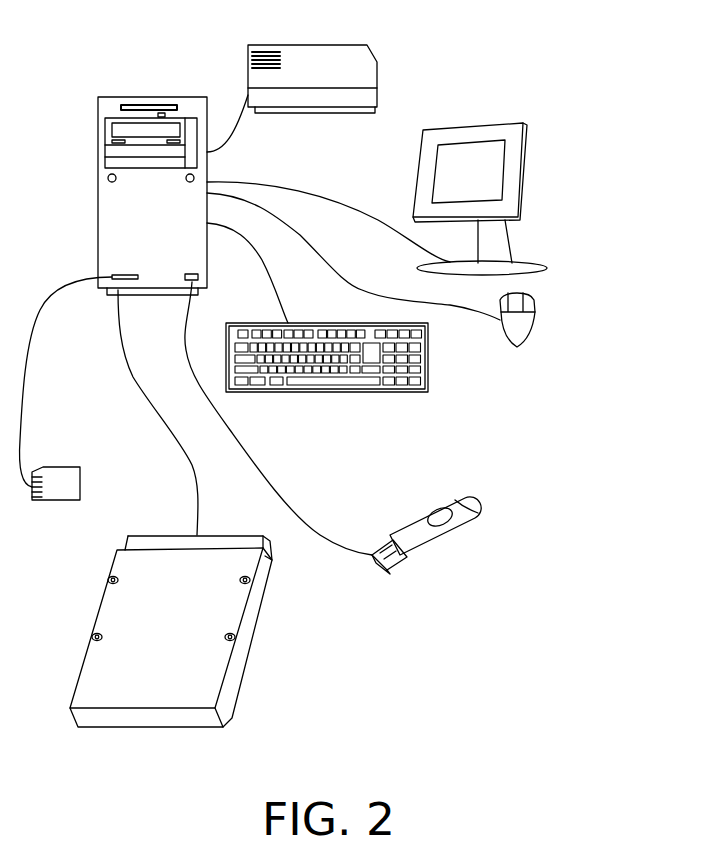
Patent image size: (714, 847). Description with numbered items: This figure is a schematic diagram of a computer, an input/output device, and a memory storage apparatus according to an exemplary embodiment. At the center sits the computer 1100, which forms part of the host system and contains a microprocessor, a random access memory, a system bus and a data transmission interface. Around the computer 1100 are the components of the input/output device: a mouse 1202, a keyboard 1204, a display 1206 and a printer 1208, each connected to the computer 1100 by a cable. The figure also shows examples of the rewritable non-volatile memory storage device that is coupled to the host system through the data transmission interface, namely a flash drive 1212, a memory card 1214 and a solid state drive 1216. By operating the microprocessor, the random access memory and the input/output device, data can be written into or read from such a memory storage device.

The computer 1100 is at (152, 97).
The printer 1208 is at (308, 45).
The display 1206 is at (482, 125).
The mouse 1202 is at (535, 323).
The keyboard 1204 is at (430, 370).
The memory card 1214 is at (80, 473).
The solid state drive 1216 is at (228, 521).
The flash drive 1212 is at (423, 517).